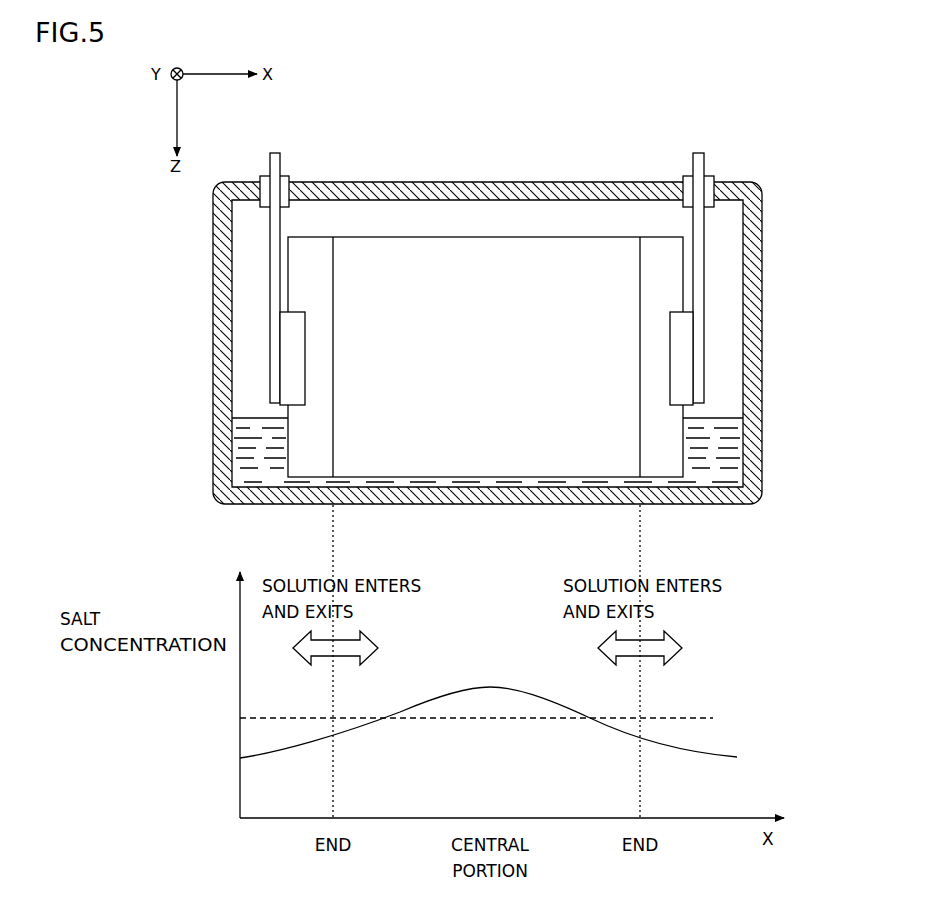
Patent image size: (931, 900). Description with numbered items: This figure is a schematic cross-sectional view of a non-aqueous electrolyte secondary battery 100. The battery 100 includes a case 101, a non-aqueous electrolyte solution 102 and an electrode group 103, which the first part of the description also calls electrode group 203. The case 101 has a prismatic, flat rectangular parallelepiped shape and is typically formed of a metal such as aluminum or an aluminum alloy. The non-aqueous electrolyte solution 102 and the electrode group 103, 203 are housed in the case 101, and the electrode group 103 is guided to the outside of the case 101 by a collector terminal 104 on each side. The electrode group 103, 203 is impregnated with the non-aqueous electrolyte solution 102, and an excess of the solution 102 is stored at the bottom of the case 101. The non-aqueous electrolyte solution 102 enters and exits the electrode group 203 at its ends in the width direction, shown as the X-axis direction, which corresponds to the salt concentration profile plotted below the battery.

The battery 100 is at (780, 90).
The case 101 is at (428, 182).
The non-aqueous electrolyte solution 102 is at (713, 450).
The electrode group 103 is at (485, 303).
The electrode group 203 is at (482, 332).
The collector terminal 104 is at (276, 153).